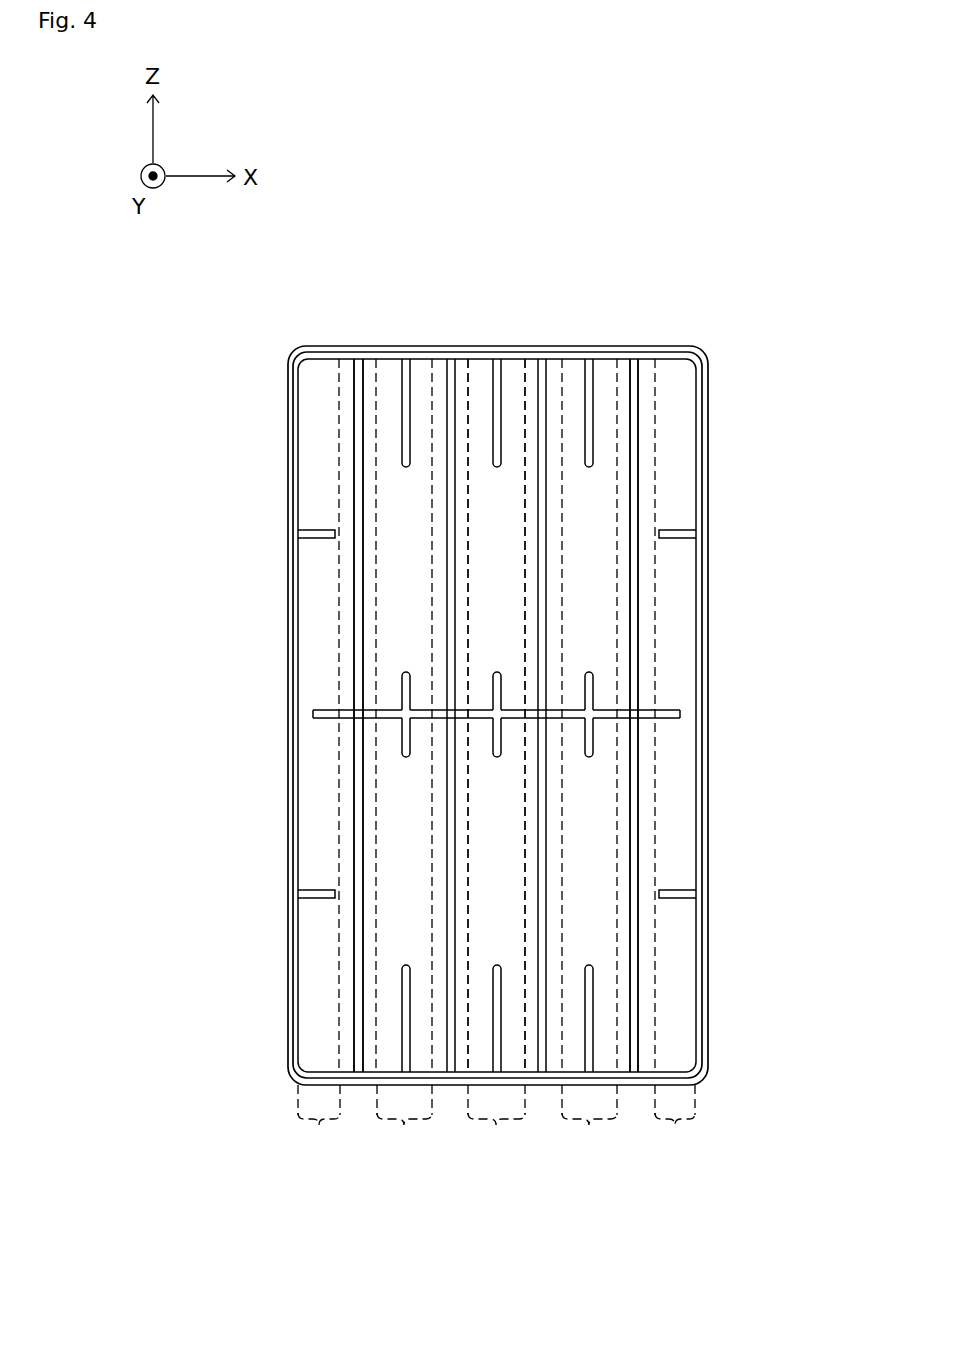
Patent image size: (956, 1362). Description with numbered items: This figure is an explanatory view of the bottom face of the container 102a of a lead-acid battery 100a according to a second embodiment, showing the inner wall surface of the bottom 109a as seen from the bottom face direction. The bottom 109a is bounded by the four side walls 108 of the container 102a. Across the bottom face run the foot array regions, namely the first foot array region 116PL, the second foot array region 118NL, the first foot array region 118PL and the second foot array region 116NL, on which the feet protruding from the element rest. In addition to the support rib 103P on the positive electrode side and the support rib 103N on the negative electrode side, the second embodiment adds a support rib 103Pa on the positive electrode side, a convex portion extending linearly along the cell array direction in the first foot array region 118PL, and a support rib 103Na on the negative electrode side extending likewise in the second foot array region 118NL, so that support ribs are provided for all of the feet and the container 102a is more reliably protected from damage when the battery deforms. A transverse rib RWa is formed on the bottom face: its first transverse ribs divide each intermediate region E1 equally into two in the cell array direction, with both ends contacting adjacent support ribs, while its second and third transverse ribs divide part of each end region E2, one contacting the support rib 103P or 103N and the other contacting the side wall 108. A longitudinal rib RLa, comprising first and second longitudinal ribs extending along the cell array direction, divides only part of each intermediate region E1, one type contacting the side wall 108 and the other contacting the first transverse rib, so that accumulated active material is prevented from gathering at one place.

The lead-acid battery 100a is at (771, 127).
The container 102a is at (753, 267).
The side wall 108 is at (553, 1230).
The bottom 109a is at (680, 855).
The first foot array region 116PL is at (348, 357).
The second foot array region 118NL is at (441, 357).
The first foot array region 118PL is at (557, 357).
The second foot array region 116NL is at (653, 357).
The support rib on the positive electrode side 103P is at (360, 462).
The support rib on the negative electrode side 103N is at (636, 420).
The support rib on the positive electrode side 103Pa is at (522, 523).
The support rib on the negative electrode side 103Na is at (462, 480).
The longitudinal rib RLa is at (584, 397).
The transverse rib RWa is at (332, 541).
The intermediate region E1 is at (498, 775).
The end region E2 is at (498, 775).